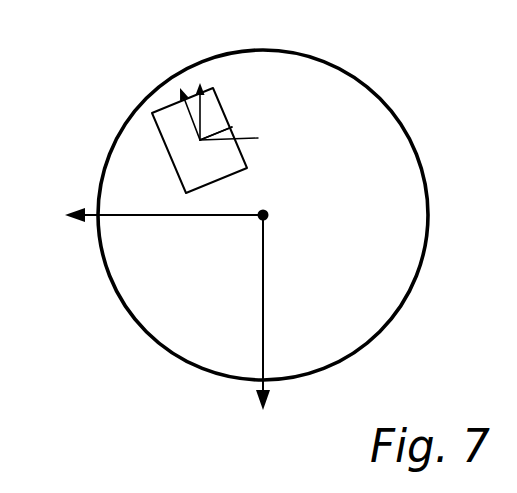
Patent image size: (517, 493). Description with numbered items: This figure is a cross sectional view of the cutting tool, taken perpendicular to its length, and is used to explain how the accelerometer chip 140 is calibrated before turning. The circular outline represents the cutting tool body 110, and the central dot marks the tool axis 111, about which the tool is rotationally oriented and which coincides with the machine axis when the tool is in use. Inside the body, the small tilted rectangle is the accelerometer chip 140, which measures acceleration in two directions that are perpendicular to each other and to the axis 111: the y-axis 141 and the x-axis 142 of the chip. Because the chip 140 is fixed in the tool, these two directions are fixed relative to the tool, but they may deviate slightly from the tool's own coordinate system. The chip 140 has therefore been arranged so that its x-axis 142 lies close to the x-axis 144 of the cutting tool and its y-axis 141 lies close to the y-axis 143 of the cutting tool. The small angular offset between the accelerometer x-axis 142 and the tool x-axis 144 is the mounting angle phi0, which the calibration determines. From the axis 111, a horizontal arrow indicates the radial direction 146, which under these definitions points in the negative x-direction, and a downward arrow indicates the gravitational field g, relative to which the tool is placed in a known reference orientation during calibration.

The cutting tool body 110 is at (378, 92).
The axis 111 is at (268, 215).
The accelerometer chip 140 is at (162, 137).
The y-axis of the chip 141 is at (170, 108).
The x-axis of the chip 142 is at (241, 118).
The y-axis of the cutting tool 143 is at (202, 97).
The x-axis of the cutting tool 144 is at (251, 146).
The radial direction 146 is at (138, 216).
The gravitational field g is at (265, 355).
The mounting angle phi0 is at (258, 138).